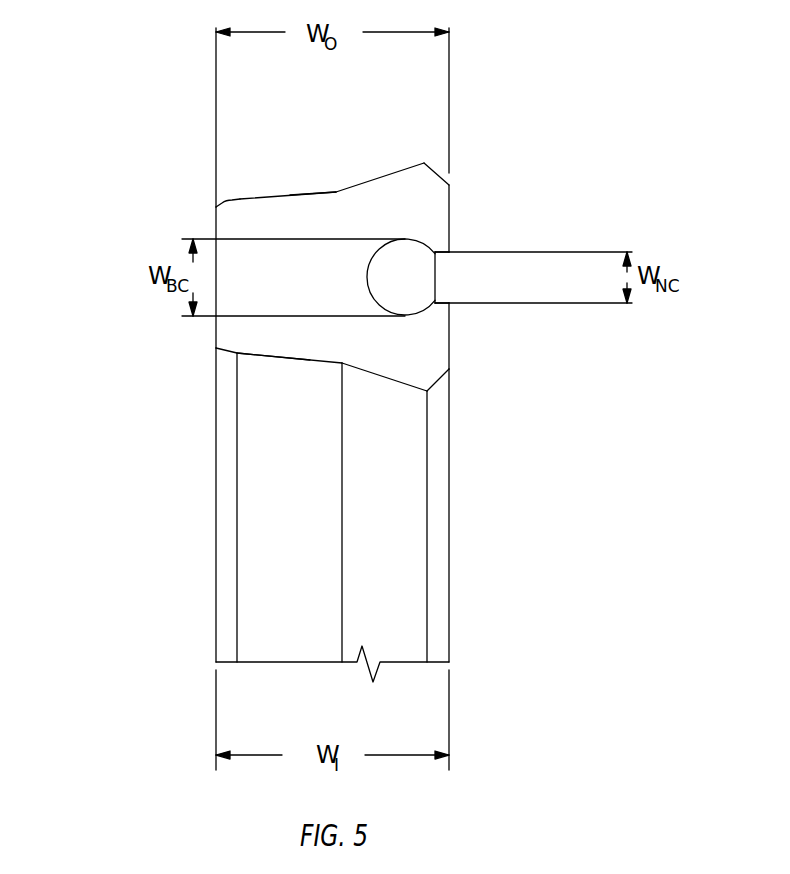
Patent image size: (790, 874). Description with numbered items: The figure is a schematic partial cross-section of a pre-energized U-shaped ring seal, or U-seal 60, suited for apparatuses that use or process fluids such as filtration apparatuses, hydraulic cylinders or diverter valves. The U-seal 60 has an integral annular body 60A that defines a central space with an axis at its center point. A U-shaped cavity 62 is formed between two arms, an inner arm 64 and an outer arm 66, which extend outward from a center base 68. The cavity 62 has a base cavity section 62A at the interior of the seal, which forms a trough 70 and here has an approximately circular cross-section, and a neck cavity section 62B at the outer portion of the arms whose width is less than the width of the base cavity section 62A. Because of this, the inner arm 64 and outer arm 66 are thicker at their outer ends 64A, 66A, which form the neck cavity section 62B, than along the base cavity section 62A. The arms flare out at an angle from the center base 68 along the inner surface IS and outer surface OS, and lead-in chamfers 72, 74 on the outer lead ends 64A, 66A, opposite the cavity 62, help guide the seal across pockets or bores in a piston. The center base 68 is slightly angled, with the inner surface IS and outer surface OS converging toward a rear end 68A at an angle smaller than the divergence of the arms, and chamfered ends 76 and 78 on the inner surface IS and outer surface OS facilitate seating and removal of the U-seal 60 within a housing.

The U-seal 60 is at (160, 92).
The integral annular body 60A is at (216, 550).
The cavity 62 is at (450, 281).
The base cavity section 62A is at (388, 303).
The neck cavity section 62B is at (449, 262).
The inner arm 64 is at (395, 382).
The outer end of inner arm 64A is at (449, 322).
The outer arm 66 is at (405, 168).
The outer end of outer arm 66A is at (450, 192).
The center base 68 is at (303, 193).
The rear end 68A is at (216, 338).
The trough 70 is at (367, 287).
The lead-in chamfer 72 is at (449, 378).
The lead-in chamfer 74 is at (436, 172).
The chamfered end 76 is at (217, 352).
The chamfered end 78 is at (224, 202).
The outer surface OS is at (257, 198).
The inner surface IS is at (287, 358).